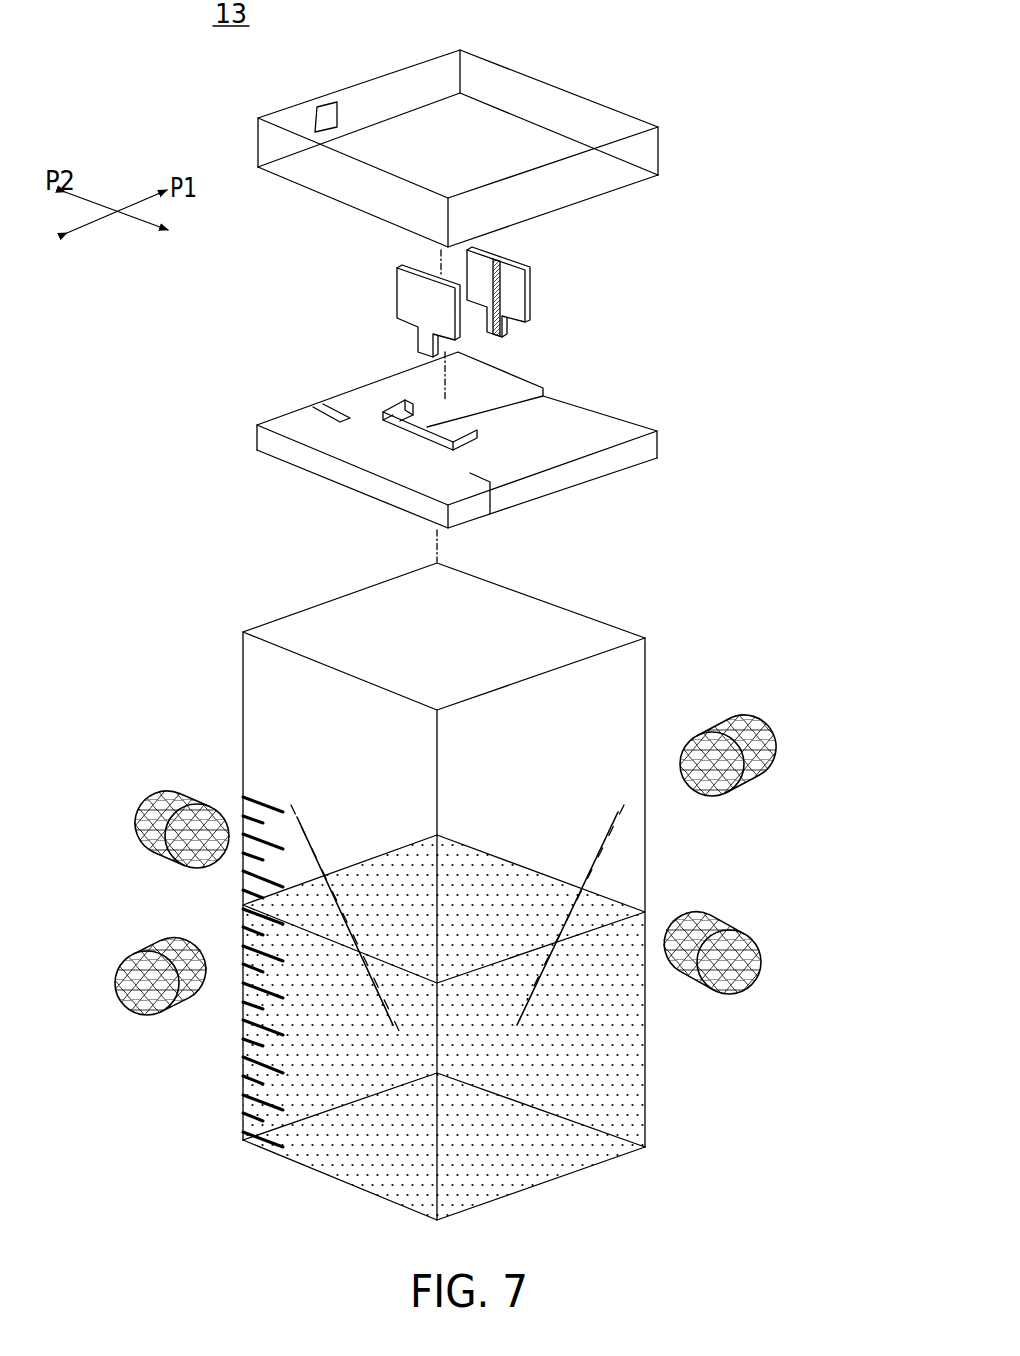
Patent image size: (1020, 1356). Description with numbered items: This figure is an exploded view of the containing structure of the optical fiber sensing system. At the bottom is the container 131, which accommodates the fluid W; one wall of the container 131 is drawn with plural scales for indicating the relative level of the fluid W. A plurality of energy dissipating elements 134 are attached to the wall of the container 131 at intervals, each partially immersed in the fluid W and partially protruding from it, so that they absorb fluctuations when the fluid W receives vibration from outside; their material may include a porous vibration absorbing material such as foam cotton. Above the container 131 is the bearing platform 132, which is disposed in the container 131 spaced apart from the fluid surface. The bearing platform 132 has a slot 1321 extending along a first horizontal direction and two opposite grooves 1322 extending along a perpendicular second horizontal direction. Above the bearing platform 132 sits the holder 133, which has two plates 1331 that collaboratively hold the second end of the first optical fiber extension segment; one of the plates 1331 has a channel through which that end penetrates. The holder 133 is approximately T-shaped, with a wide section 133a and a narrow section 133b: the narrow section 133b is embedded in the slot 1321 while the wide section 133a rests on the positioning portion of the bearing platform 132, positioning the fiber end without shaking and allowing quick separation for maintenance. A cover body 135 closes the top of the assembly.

The container 131 is at (620, 845).
The bearing platform 132 is at (490, 452).
The slot 1321 is at (493, 408).
The grooves 1322 is at (332, 412).
The holder 133 is at (502, 305).
The wide section 133a is at (510, 282).
The narrow section 133b is at (435, 348).
The plates 1331 is at (477, 270).
The energy dissipating elements 134 is at (752, 750).
The cover body 135 is at (648, 148).
The fluid W is at (597, 1035).